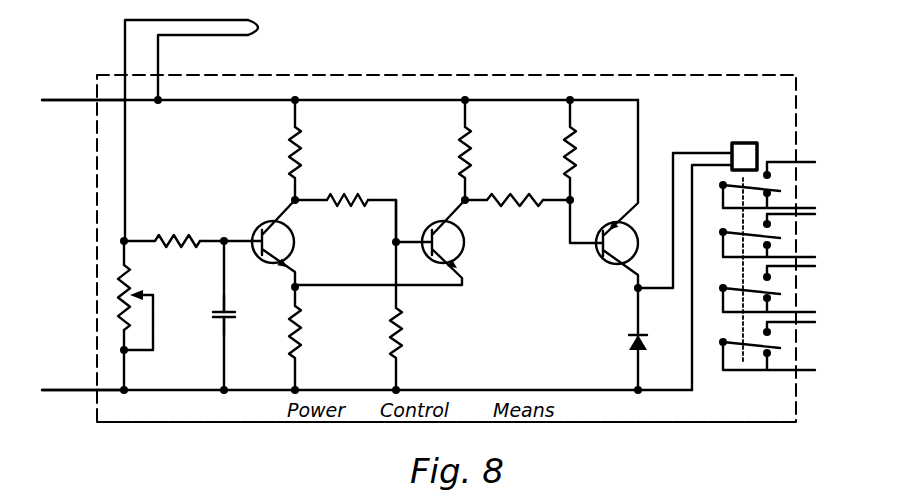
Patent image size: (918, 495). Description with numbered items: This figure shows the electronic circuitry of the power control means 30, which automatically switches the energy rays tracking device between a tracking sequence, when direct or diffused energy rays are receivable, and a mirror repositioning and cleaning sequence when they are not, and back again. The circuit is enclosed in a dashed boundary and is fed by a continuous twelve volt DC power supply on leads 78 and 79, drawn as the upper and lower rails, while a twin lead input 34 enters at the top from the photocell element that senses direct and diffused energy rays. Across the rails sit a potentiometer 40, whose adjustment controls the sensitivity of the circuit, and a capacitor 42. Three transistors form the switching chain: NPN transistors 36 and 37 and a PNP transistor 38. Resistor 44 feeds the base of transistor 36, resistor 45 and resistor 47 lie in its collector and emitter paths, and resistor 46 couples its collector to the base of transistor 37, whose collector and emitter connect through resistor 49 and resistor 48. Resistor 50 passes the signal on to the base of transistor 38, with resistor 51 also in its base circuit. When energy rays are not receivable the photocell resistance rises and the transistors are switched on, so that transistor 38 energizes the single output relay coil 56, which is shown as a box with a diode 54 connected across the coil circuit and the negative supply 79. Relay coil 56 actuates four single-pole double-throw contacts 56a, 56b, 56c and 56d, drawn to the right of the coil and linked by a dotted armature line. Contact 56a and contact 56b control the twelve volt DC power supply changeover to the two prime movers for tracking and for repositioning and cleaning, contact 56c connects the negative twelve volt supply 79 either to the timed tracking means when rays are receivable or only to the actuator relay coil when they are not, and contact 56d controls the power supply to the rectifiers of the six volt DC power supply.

The power control means 30 is at (797, 422).
The twin lead input 34 is at (272, 28).
The transistor 36 is at (258, 223).
The transistor 37 is at (437, 223).
The transistor 38 is at (602, 263).
The potentiometer 40 is at (112, 292).
The capacitor 42 is at (212, 316).
The resistor 44 is at (180, 229).
The resistor 45 is at (289, 149).
The resistor 46 is at (352, 190).
The resistor 47 is at (300, 334).
The resistor 48 is at (405, 334).
The resistor 49 is at (459, 149).
The resistor 50 is at (508, 221).
The resistor 51 is at (577, 150).
The diode 54 is at (625, 335).
The relay coil 56 is at (737, 140).
The contact 56a is at (782, 178).
The contact 56b is at (782, 235).
The contact 56c is at (782, 287).
The contact 56d is at (782, 341).
The 12 volt DC power supply 78 is at (42, 100).
The 12 volt DC power supply 79 is at (42, 390).